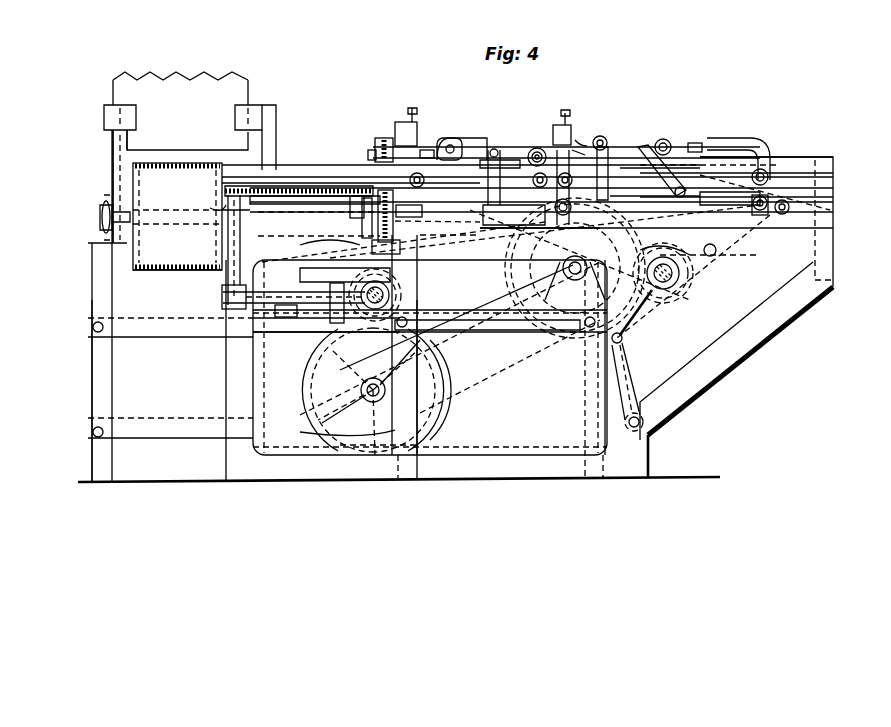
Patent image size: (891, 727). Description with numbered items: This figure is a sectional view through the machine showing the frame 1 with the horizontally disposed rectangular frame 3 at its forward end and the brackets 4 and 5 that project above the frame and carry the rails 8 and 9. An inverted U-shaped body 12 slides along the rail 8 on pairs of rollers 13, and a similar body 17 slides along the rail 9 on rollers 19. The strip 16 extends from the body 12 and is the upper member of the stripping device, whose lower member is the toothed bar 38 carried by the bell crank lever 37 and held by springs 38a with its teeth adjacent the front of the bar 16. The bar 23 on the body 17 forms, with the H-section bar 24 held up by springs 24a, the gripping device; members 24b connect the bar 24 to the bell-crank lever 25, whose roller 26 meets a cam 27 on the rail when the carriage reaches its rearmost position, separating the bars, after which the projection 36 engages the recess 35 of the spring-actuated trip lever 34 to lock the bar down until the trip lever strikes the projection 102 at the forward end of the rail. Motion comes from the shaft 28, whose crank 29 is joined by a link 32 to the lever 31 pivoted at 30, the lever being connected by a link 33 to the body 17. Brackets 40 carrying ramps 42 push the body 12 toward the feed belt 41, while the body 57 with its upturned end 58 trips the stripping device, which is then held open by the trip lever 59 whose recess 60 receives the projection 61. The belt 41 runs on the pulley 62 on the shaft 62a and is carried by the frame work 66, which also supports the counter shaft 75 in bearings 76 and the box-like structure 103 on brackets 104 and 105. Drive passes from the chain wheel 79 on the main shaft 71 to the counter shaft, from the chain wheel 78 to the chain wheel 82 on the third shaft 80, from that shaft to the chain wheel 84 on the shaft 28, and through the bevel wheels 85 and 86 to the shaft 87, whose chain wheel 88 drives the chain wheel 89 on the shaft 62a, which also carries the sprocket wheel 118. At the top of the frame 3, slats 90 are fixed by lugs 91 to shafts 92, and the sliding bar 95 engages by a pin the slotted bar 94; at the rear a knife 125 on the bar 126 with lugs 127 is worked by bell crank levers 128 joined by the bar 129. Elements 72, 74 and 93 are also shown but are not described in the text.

The frame 1 is at (238, 344).
The rectangular frame 3 is at (221, 201).
The bracket 4 is at (229, 183).
The bracket 5 is at (822, 172).
The rail or guide bar 8 is at (802, 165).
The rail 9 is at (826, 193).
The body 12 is at (489, 132).
The rollers 13 is at (411, 180).
The strip or bar 16 is at (398, 140).
The body 17 is at (762, 142).
The rollers 19 is at (575, 214).
The bar 23 is at (555, 135).
The bar 24 is at (529, 155).
The springs 24a is at (570, 130).
The members 24b is at (577, 146).
The bell-crank lever 25 is at (665, 146).
The rollers 26 is at (683, 196).
The cams 27 is at (736, 195).
The shaft 28 is at (700, 285).
The crank 29 is at (700, 275).
The pivot 30 is at (645, 422).
The lever 31 is at (774, 215).
The link 32 is at (662, 308).
The link 33 is at (600, 223).
The trip lever 34 is at (655, 196).
The recess 35 is at (660, 174).
The projection 36 is at (608, 144).
The bell crank lever 37 is at (466, 112).
The notched or toothed bar 38 is at (375, 152).
The springs 38a is at (412, 140).
The bracket 40 is at (700, 150).
The feed belt 41 is at (177, 216).
The ramp 42 is at (700, 142).
The body 57 is at (582, 240).
The upturned end 58 is at (478, 218).
The trip lever 59 is at (513, 187).
The recess 60 is at (476, 177).
The projection 61 is at (460, 140).
The pulley 62 is at (167, 270).
The shaft 62a is at (205, 230).
The frame work 66 is at (108, 390).
The main shaft 71 is at (436, 392).
The guard 72 is at (336, 428).
The belt 74 is at (430, 352).
The counter shaft 75 is at (560, 284).
The bearings 76 is at (562, 268).
The chain wheel 78 is at (640, 320).
The chain wheel 79 is at (360, 384).
The third shaft 80 is at (392, 298).
The chain wheel 82 is at (340, 205).
The chain wheel 84 is at (708, 250).
The bevel wheel 85 is at (396, 292).
The bevel wheel 86 is at (326, 320).
The shaft 87 is at (326, 296).
The chain wheel 88 is at (223, 296).
The chain wheel 89 is at (240, 226).
The slats 90 is at (304, 206).
The lugs 91 is at (256, 205).
The shafts 92 is at (378, 244).
The spring 93 is at (330, 240).
The bar 94 is at (384, 232).
The bar or rod 95 is at (382, 233).
The projections 102 is at (299, 178).
The rectangular box-like structure 103 is at (183, 157).
The bracket 104 is at (278, 120).
The bracket 105 is at (126, 160).
The sprocket wheel 118 is at (103, 207).
The knife 125 is at (440, 182).
The bar 126 is at (437, 214).
The lugs 127 is at (487, 309).
The bell crank levers 128 is at (450, 234).
The bar 129 is at (545, 231).